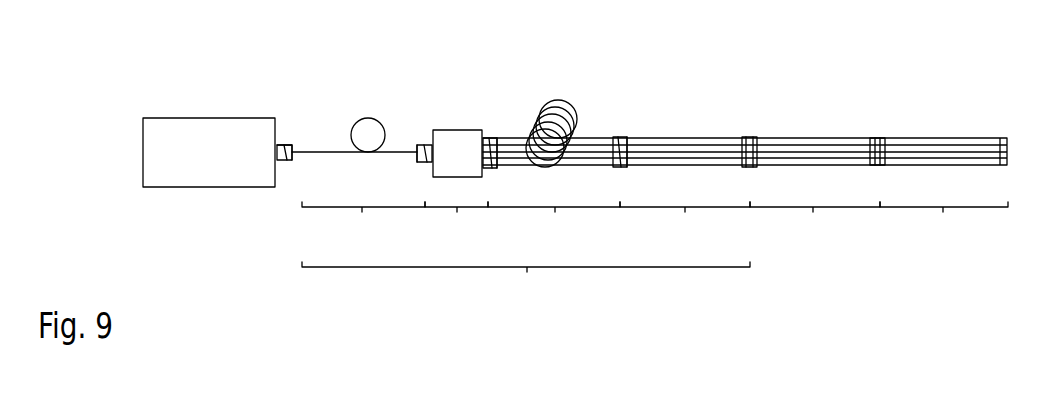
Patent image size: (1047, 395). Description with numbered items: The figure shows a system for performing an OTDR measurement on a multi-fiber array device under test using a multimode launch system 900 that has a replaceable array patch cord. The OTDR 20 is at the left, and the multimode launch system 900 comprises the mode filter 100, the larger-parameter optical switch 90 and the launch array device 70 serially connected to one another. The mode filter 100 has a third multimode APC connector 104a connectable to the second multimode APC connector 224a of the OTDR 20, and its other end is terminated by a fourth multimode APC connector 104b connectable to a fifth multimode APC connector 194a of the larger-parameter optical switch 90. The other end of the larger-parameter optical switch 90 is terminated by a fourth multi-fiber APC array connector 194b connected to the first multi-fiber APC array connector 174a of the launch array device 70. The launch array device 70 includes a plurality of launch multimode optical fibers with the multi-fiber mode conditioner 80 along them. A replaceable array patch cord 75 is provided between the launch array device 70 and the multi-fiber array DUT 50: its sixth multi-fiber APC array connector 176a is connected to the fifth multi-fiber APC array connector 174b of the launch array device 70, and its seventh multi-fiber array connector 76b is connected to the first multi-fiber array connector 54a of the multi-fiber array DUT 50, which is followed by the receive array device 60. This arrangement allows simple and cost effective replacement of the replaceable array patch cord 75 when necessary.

The OTDR 20 is at (210, 116).
The second multimode APC connector 224a is at (284, 160).
The third multimode APC connector 104a is at (288, 145).
The fourth multimode APC connector 104b is at (420, 145).
The mode filter 100 is at (358, 203).
The fifth multimode APC connector 194a is at (425, 148).
The fourth multi-fiber APC array connector 194b is at (489, 138).
The larger-parameter optical switch 90 is at (456, 192).
The first multi-fiber APC array connector 174a is at (497, 138).
The fifth multi-fiber APC array connector 174b is at (616, 137).
The launch array device 70 is at (554, 228).
The multi-fiber mode conditioner 80 is at (557, 100).
The sixth multi-fiber APC array connector 176a is at (624, 137).
The seventh multi-fiber array connector 76b is at (746, 137).
The replaceable array patch cord 75 is at (685, 226).
The first multi-fiber array connector 54a is at (753, 137).
The multi-fiber array DUT 50 is at (817, 196).
The receive array device 60 is at (944, 228).
The multimode launch system 900 is at (654, 225).